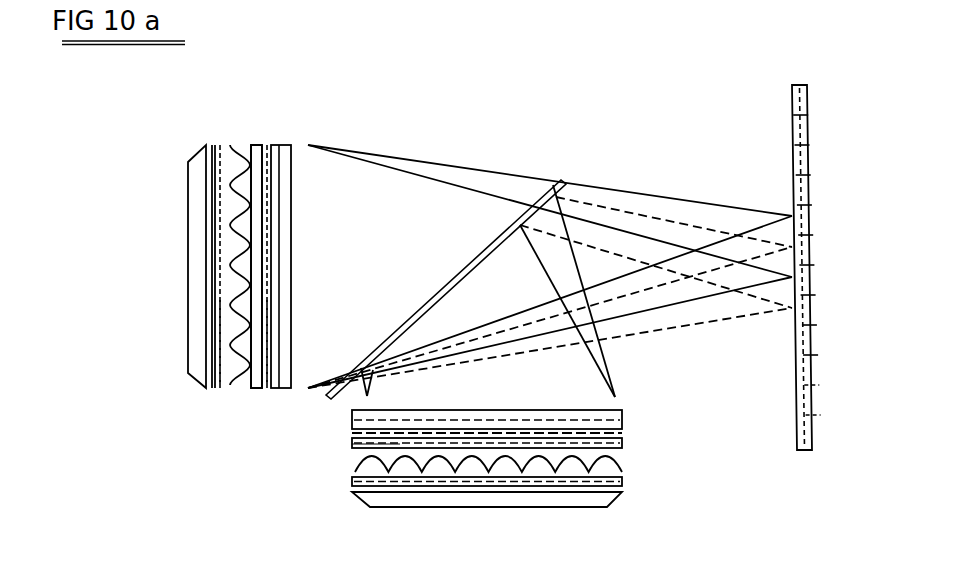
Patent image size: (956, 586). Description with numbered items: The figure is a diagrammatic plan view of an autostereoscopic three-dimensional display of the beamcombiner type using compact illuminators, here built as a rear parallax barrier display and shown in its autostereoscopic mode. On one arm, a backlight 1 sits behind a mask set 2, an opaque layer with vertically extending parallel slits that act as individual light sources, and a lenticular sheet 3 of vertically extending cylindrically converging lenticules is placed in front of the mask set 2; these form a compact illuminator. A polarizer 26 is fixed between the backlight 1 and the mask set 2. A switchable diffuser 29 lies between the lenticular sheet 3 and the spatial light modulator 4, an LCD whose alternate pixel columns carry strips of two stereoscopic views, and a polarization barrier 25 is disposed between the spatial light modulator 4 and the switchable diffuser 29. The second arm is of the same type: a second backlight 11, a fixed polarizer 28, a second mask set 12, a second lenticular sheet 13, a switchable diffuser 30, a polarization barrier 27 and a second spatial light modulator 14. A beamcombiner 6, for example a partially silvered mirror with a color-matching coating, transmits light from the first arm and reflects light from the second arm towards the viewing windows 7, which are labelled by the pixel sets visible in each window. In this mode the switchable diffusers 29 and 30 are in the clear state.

The backlight 1 is at (198, 150).
The mask set 2 is at (220, 146).
The lenticular sheet 3 is at (230, 147).
The spatial light modulator 4 is at (273, 147).
The beamcombiner 6 is at (563, 180).
The viewing windows 7 is at (831, 357).
The second backlight 11 is at (592, 497).
The second mask set 12 is at (355, 481).
The second lenticular sheet 13 is at (355, 458).
The second spatial light modulator 14 is at (622, 414).
The polarization barrier 25 is at (253, 147).
The polarizer 26 is at (219, 388).
The polarization barrier 27 is at (622, 434).
The polarizer 28 is at (622, 488).
The switchable diffuser 29 is at (263, 388).
The switchable diffuser 30 is at (352, 444).